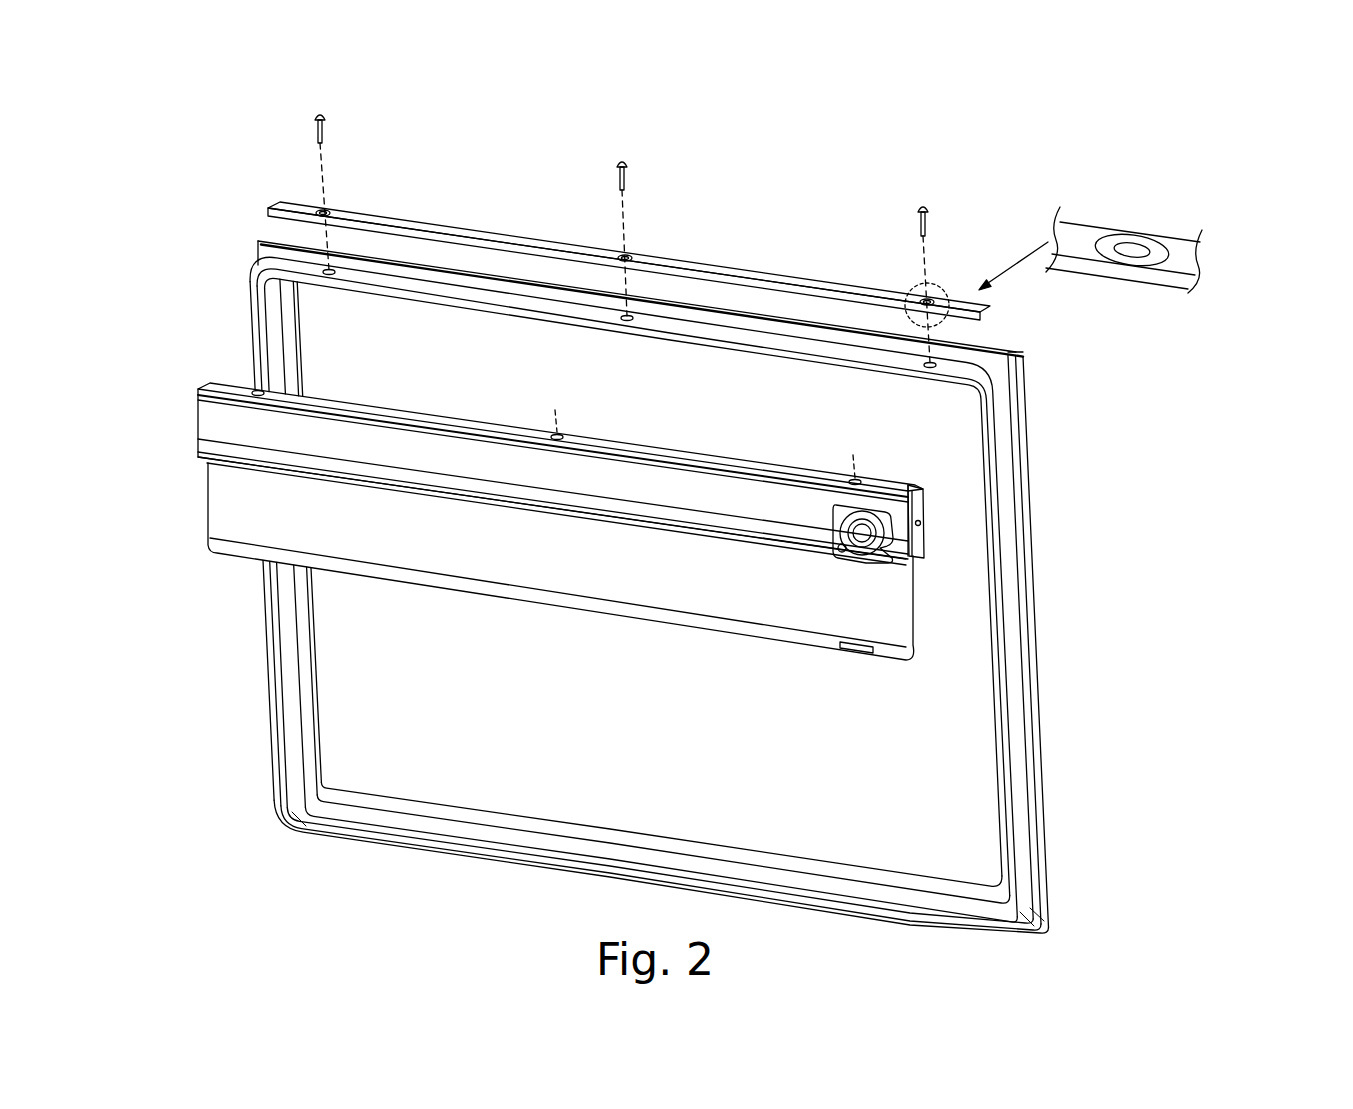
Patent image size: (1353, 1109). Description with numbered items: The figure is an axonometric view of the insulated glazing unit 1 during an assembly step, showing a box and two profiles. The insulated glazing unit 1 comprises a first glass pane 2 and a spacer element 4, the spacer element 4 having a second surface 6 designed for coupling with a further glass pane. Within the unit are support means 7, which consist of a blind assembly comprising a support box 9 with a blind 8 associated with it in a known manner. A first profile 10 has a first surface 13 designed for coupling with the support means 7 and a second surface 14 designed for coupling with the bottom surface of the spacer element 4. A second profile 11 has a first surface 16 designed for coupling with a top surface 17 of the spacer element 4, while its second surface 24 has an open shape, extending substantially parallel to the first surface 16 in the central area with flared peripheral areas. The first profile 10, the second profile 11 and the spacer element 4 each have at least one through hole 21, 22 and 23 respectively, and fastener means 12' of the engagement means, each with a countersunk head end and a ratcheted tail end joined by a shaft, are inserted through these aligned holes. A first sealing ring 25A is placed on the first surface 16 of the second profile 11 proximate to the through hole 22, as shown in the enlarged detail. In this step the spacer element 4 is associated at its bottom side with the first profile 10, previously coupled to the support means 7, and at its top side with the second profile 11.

The insulated glazing unit 1 is at (1136, 189).
The first glass pane 2 is at (694, 587).
The spacer element 4 is at (669, 616).
The second surface 6 is at (990, 928).
The support means 7 is at (600, 480).
The blind 8 is at (228, 558).
The support box 9 is at (198, 418).
The first profile 10 is at (218, 385).
The second profile 11 is at (725, 246).
The fastener means 12' is at (653, 213).
The first surface 13 is at (921, 496).
The second surface 14 is at (912, 490).
The first surface 16 is at (778, 298).
The top surface 17 is at (1005, 364).
The through hole 21 is at (262, 394).
The through hole 22 is at (316, 198).
The through hole 23 is at (340, 300).
The second surface 24 is at (1198, 262).
The first sealing ring 25A is at (1160, 238).